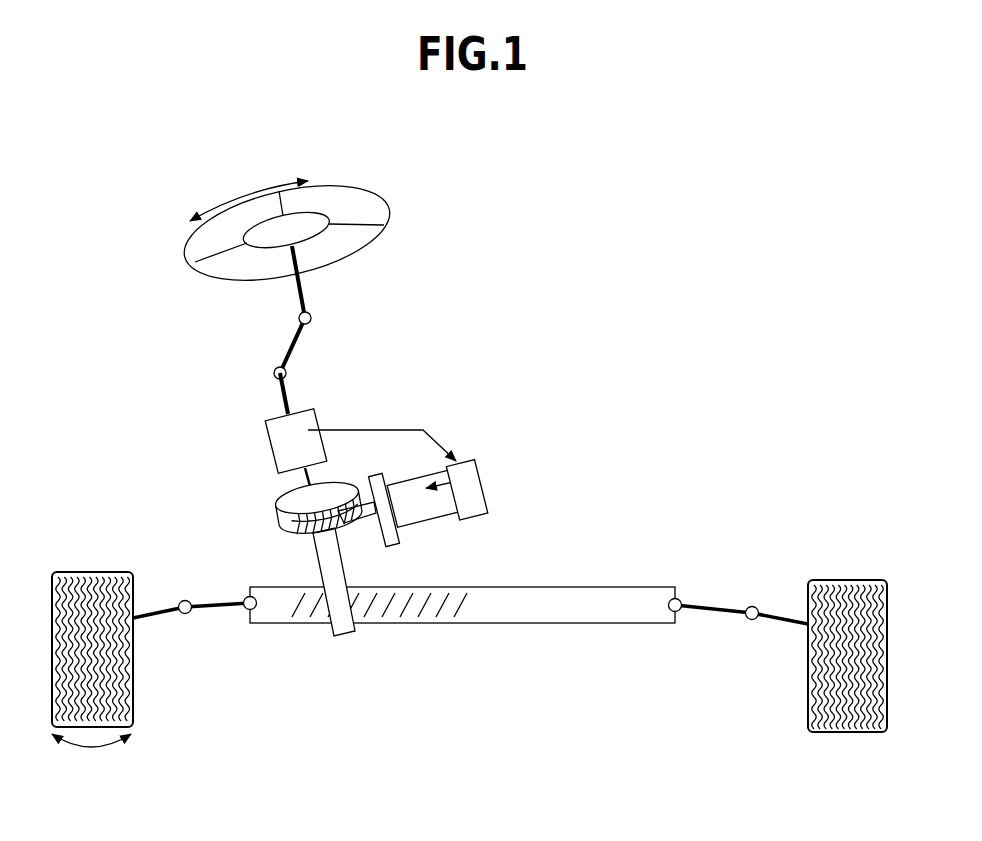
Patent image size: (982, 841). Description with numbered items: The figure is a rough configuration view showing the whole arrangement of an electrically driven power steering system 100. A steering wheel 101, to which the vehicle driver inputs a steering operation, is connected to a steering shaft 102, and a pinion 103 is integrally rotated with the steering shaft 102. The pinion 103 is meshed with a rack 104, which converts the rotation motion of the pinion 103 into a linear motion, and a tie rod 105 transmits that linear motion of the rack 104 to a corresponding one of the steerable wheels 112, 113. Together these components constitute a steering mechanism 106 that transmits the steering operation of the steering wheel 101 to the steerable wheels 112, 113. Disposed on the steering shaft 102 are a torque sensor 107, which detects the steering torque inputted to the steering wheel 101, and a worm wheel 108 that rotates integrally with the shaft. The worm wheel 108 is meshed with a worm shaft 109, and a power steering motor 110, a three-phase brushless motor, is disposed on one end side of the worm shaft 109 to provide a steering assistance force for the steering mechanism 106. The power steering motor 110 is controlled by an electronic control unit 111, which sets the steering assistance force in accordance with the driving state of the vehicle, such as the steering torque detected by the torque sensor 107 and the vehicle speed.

The electrically driven power steering system 100 is at (527, 313).
The steering wheel 101 is at (390, 210).
The steering shaft 102 is at (280, 393).
The pinion 103 is at (345, 627).
The rack 104 is at (602, 587).
The tie rod 105 is at (217, 612).
The steering mechanism 106 is at (261, 350).
The torque sensor 107 is at (320, 412).
The worm wheel 108 is at (290, 503).
The worm shaft 109 is at (366, 514).
The power steering motor 110 is at (433, 527).
The electronic control unit 111 is at (485, 482).
The steerable wheel 112 is at (840, 579).
The steerable wheel 113 is at (92, 572).